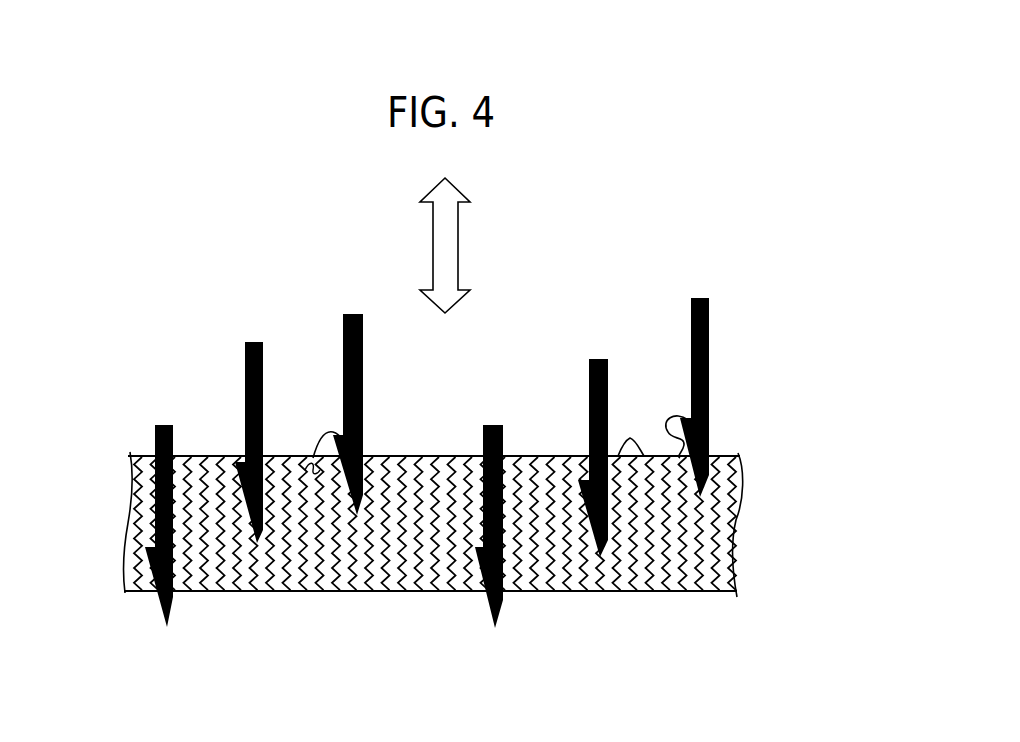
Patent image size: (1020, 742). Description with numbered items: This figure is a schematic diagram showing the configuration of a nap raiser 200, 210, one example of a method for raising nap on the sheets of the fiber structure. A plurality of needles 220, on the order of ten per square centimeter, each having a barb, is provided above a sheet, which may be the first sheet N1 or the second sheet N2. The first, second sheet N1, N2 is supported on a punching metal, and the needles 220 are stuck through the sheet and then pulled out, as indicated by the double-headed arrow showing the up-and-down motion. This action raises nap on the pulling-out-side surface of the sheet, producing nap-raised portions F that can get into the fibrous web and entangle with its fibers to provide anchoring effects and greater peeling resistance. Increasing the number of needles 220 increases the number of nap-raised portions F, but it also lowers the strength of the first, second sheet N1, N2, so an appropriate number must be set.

The nap raiser 200 is at (116, 323).
The nap raiser 210 is at (429, 428).
The needle 220 is at (163, 425).
The nap-raised portion F is at (322, 427).
The first sheet N1 is at (732, 530).
The second sheet N2 is at (433, 524).